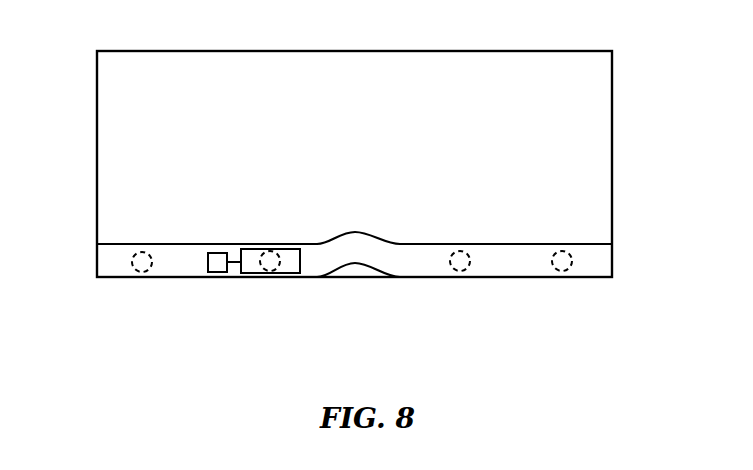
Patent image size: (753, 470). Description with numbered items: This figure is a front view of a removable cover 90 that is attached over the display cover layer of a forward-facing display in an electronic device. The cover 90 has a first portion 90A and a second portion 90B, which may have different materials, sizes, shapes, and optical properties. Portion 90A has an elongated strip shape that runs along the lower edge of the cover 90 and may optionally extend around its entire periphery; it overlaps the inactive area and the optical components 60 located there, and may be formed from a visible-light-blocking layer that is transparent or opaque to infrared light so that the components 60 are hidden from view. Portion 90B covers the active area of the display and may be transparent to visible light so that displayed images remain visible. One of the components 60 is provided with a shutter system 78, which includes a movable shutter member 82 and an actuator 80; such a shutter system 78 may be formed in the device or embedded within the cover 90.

The cover 90 is at (648, 66).
The second portion 90B is at (87, 52).
The first portion 90A is at (87, 248).
The optical components 60 is at (147, 272).
The actuator 80 is at (218, 272).
The movable shutter member 82 is at (300, 262).
The shutter system 78 is at (262, 280).